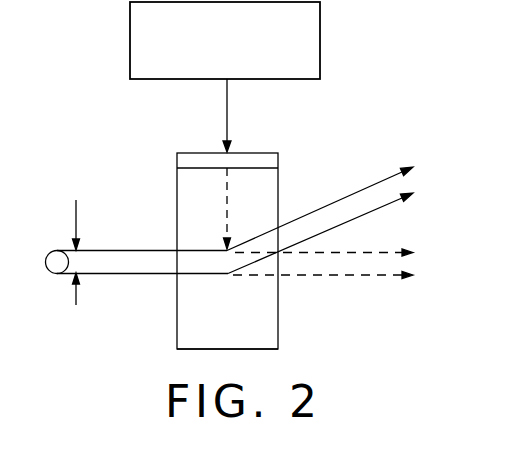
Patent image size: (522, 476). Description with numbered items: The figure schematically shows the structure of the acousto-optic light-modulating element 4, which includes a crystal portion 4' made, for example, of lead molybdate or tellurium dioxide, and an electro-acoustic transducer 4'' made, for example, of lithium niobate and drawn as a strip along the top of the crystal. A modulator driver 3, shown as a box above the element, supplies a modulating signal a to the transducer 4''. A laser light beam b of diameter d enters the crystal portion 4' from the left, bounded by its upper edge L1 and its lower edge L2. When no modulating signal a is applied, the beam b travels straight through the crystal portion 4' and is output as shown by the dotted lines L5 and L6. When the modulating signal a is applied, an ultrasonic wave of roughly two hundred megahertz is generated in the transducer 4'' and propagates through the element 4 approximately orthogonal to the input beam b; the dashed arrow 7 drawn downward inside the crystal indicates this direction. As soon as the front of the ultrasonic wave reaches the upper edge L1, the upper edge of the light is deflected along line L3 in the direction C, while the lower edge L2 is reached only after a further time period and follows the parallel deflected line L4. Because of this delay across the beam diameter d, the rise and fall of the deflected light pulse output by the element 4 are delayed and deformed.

The modulator driver 3 is at (320, 50).
The modulating signal a is at (227, 102).
The acousto-optic light-modulating element 4 is at (212, 246).
The electro-acoustic transducer 4'' is at (244, 154).
The crystal portion 4' is at (248, 343).
The electric field direction 7 is at (227, 236).
The laser light beam b is at (47, 270).
The diameter of the input light beam d is at (69, 252).
The upper edge of the input light beam L1 is at (98, 250).
The lower edge of the input light beam L2 is at (98, 275).
The deflected light line L3 is at (355, 192).
The deflected lower beam edge L4 is at (393, 201).
The undeflected output light line L5 is at (353, 251).
The undeflected output light line L6 is at (349, 279).
The deflection direction C is at (426, 161).